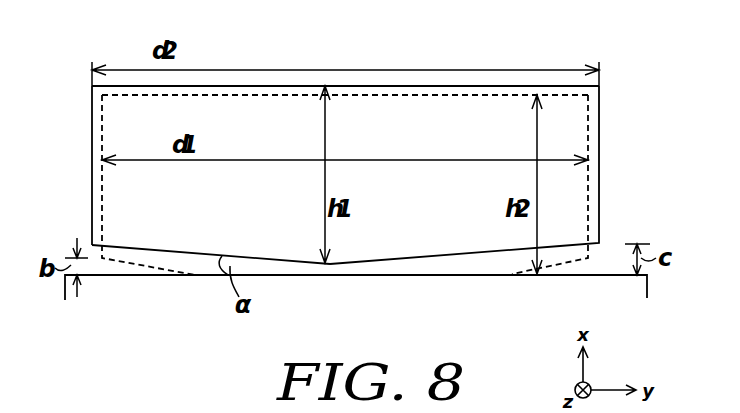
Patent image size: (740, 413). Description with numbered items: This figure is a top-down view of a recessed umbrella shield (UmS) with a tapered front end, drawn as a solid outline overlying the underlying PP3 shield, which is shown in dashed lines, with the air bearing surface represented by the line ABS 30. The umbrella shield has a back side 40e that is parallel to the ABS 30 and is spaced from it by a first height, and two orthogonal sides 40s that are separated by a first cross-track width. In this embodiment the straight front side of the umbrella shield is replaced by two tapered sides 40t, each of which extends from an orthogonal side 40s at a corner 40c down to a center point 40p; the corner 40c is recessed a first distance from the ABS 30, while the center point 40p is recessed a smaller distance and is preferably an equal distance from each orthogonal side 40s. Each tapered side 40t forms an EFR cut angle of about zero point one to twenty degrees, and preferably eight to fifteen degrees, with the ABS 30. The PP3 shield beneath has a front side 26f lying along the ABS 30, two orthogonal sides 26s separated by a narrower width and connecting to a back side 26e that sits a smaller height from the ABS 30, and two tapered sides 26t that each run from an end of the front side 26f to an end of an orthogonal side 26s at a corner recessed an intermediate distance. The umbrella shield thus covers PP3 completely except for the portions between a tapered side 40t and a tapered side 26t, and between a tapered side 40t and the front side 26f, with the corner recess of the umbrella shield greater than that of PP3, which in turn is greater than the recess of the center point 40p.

The orthogonal side 40s is at (92, 119).
The back side 40e is at (355, 86).
The corner 40c is at (599, 243).
The tapered side 40t is at (472, 254).
The center point 40p is at (343, 265).
The back side 26e is at (482, 95).
The orthogonal side 26s is at (588, 117).
The tapered side 26t is at (140, 268).
The front side 26f is at (280, 276).
The ABS 30 is at (356, 304).